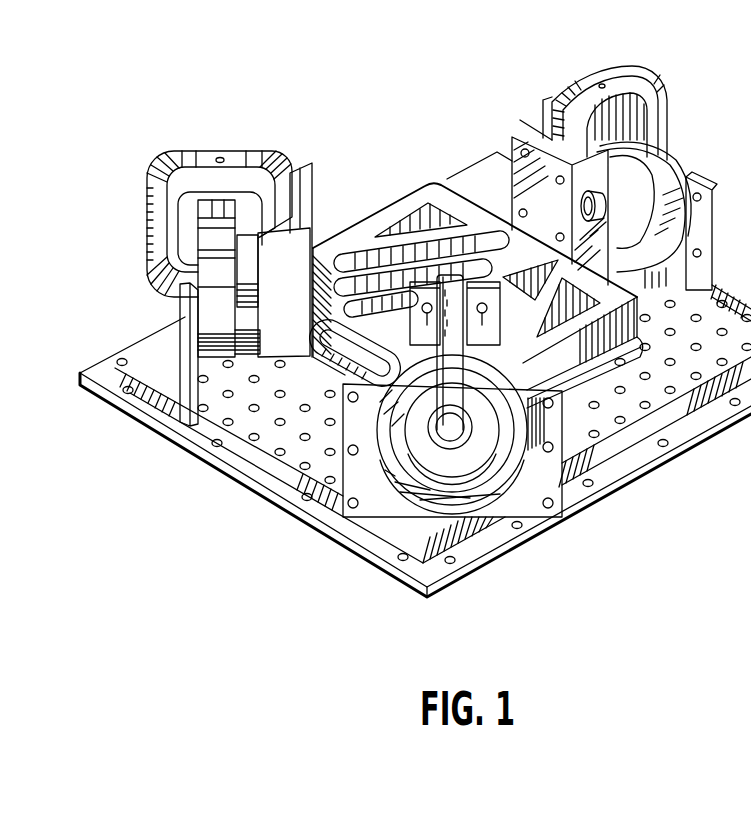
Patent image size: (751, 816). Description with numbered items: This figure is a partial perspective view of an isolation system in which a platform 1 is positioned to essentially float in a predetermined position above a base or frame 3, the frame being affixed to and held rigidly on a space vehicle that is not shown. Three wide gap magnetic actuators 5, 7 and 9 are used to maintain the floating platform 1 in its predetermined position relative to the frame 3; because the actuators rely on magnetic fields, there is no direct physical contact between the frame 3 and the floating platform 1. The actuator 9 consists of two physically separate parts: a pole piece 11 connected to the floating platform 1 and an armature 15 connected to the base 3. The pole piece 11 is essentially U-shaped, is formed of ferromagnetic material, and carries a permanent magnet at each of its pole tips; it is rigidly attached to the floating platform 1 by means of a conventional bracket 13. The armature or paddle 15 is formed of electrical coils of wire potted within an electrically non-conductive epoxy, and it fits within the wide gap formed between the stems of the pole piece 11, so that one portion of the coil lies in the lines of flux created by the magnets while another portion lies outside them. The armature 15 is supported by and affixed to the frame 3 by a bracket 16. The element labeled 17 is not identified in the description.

The platform 1 is at (414, 177).
The base or frame 3 is at (627, 463).
The wide gap magnetic actuator 5 is at (560, 72).
The wide gap magnetic actuator 7 is at (566, 530).
The wide gap magnetic actuator 9 is at (136, 216).
The pole piece 11 is at (150, 252).
The bracket 13 is at (296, 338).
The armature or paddle 15 is at (220, 262).
The bracket 16 is at (182, 338).
The pin 17 is at (605, 211).